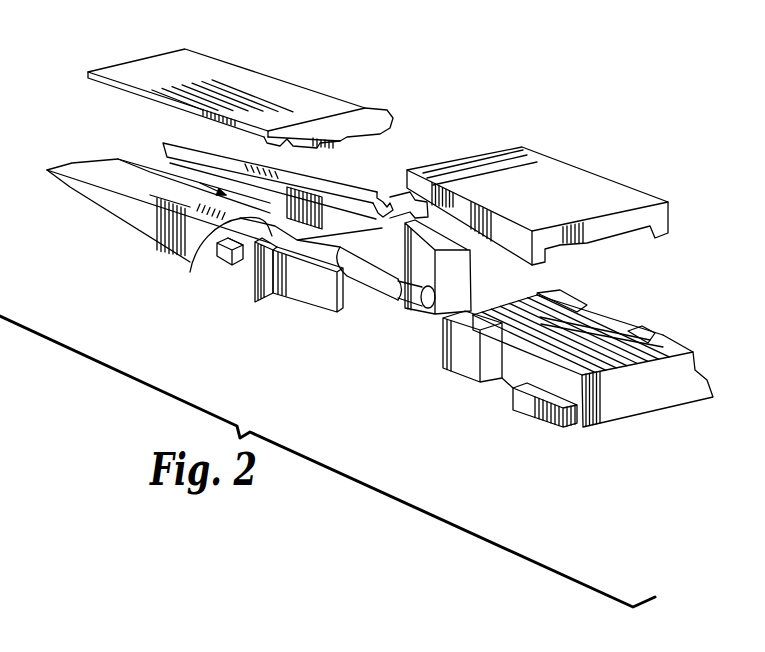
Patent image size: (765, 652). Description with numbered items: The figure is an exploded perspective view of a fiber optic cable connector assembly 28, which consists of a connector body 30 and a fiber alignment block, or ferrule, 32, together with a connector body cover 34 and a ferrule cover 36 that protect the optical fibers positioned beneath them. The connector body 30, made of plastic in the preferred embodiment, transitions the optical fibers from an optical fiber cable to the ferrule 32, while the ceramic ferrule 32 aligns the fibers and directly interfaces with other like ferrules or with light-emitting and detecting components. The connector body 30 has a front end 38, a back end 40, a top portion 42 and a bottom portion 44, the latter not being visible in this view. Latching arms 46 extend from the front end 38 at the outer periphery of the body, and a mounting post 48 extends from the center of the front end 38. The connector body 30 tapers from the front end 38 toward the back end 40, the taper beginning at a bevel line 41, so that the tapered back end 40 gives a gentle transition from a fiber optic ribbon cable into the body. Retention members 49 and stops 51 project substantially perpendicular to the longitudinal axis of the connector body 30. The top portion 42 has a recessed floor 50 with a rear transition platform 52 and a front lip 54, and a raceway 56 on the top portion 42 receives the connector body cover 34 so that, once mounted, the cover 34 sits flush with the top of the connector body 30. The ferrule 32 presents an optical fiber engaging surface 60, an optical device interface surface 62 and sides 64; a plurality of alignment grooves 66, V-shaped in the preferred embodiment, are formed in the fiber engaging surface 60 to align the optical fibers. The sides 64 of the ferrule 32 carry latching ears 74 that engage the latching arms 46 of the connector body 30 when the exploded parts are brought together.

The fiber optic cable connector assembly 28 is at (440, 118).
The connector body 30 is at (143, 259).
The fiber alignment block (ferrule) 32 is at (492, 398).
The connector body cover 34 is at (219, 68).
The ferrule cover 36 is at (572, 183).
The front end 38 is at (393, 315).
The back end 40 is at (112, 148).
The bevel line 41 is at (207, 237).
The top portion 42 is at (357, 173).
The bottom portion 44 is at (140, 235).
The latching arms 46 is at (312, 307).
The mounting post 48 is at (408, 307).
The retention members 49 is at (272, 293).
The recessed floor 50 is at (173, 163).
The stops 51 is at (234, 262).
The rear transition platform 52 is at (122, 160).
The front lip 54 is at (357, 294).
The raceway 56 is at (214, 140).
The optical fiber engaging surface 60 is at (610, 323).
The optical device interface surface 62 is at (638, 403).
The sides 64 is at (567, 387).
The alignment grooves 66 is at (605, 327).
The latching ears 74 is at (465, 352).